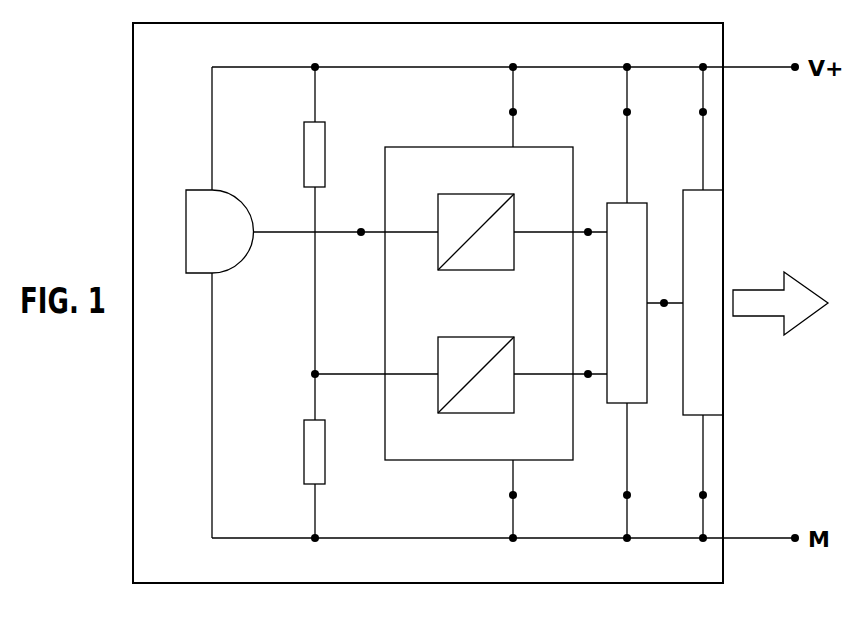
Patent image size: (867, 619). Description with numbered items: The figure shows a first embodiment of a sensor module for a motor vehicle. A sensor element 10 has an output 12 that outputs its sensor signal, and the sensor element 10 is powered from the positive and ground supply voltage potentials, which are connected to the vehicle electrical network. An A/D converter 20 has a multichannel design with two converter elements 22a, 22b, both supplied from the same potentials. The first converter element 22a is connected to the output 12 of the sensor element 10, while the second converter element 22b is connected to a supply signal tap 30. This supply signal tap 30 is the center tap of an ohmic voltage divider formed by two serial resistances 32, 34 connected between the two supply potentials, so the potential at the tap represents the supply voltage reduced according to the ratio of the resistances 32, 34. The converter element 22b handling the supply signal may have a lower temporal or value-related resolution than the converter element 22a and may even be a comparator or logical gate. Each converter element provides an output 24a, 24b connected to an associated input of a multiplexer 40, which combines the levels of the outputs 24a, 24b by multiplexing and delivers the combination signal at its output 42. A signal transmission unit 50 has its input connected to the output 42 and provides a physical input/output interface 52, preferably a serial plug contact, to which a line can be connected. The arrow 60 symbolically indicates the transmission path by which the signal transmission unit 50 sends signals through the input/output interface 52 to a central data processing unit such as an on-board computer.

The sensor element 10 is at (186, 232).
The output 12 is at (287, 234).
The A/D converter 20 is at (420, 460).
The converter element 22a is at (476, 194).
The converter element 22b is at (476, 337).
The output 24a is at (586, 229).
The output 24b is at (586, 371).
The supply signal tap 30 is at (318, 371).
The resistance 32 is at (325, 157).
The resistance 34 is at (325, 453).
The multiplexer 40 is at (617, 405).
The output 42 is at (662, 300).
The signal transmission unit 50 is at (697, 417).
The input/output interface 52 is at (723, 265).
The arrow 60 is at (757, 317).